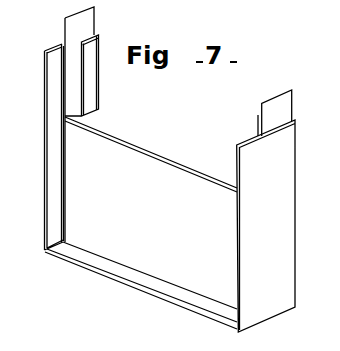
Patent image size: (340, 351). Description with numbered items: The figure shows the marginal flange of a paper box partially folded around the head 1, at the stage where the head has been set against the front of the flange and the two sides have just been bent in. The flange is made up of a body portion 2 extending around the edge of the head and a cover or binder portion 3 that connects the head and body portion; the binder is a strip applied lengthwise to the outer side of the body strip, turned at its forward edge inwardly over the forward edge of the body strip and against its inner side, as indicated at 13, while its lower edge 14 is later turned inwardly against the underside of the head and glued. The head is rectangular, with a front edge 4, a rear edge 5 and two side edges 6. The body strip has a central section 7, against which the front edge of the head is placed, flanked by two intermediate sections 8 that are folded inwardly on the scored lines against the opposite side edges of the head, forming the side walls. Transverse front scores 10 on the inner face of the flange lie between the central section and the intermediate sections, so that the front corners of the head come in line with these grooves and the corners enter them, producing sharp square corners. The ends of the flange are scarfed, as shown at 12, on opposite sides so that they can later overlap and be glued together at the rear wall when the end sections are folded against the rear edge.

The head 1 is at (150, 213).
The body portion 2 is at (277, 113).
The binder portion 3 is at (266, 226).
The front edge 4 is at (184, 294).
The rear edge 5 is at (180, 169).
The side edges 6 is at (66, 155).
The central section 7 is at (145, 279).
The intermediate sections 8 is at (62, 208).
The front scores 10 is at (73, 238).
The scarf 12 is at (258, 115).
The inwardly turned forward edge of binder 13 is at (97, 110).
The lower edge of binder 14 is at (53, 224).